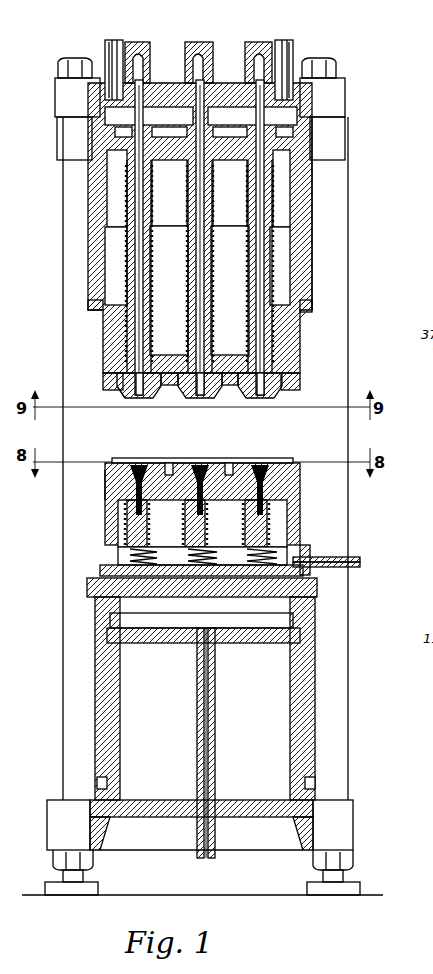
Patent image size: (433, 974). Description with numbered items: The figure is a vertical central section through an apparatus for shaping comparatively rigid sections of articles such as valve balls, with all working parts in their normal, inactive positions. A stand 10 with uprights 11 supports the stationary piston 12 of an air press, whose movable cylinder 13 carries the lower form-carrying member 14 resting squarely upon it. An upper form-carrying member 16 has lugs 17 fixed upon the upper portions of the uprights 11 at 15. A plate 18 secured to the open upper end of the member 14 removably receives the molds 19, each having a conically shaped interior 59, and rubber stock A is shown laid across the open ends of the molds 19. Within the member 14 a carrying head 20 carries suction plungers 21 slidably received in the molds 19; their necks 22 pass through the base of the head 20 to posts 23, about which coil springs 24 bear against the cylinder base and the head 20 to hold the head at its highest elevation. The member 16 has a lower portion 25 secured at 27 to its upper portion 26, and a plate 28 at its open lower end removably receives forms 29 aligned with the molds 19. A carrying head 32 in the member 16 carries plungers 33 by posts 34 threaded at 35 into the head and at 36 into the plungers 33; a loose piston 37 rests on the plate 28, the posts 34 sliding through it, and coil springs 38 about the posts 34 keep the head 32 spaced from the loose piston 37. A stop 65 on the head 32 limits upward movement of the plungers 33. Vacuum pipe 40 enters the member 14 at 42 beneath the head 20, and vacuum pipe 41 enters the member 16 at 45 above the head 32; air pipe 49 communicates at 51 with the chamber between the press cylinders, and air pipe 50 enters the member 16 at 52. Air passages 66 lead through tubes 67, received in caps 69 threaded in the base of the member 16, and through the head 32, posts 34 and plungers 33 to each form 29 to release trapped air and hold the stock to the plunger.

The stand 10 is at (342, 821).
The uprights 11 is at (76, 540).
The stationary piston 12 is at (292, 745).
The movable cylinder 13 is at (317, 594).
The lower form-carrying member 14 is at (300, 516).
The fixing point of lugs 15 is at (338, 70).
The upper form-carrying member 16 is at (310, 242).
The lugs 17 is at (340, 103).
The plate 18 is at (106, 476).
The forms or molds 19 is at (283, 457).
The carrying head 20 is at (236, 500).
The suction plungers 21 is at (217, 457).
The necks 22 is at (130, 484).
The posts 23 is at (272, 531).
The coil springs 24 is at (105, 560).
The lower portion of upper cylinder 25 is at (300, 332).
The upper portion of upper cylinder 26 is at (310, 180).
The securing point 27 is at (308, 300).
The plate 28 is at (300, 378).
The forms 29 is at (168, 395).
The carrying head 32 is at (166, 158).
The plungers 33 is at (122, 396).
The posts 34 is at (125, 246).
The threaded connection 35 is at (95, 160).
The threaded connection 36 is at (105, 375).
The loose piston 37 is at (105, 322).
The coil springs 38 is at (125, 262).
The pipe 40 is at (360, 558).
The pipe 41 is at (284, 40).
The entry point 42 is at (360, 566).
The entry point 45 is at (292, 82).
The pipe 49 is at (212, 712).
The pipe 50 is at (116, 42).
The communication point 51 is at (208, 650).
The entry point 52 is at (108, 72).
The conically shaped interior 59 is at (157, 462).
The stop 65 is at (205, 116).
The air passages 66 is at (140, 290).
The tubes 67 is at (140, 116).
The caps 69 is at (250, 42).
The rubber stock A is at (252, 457).